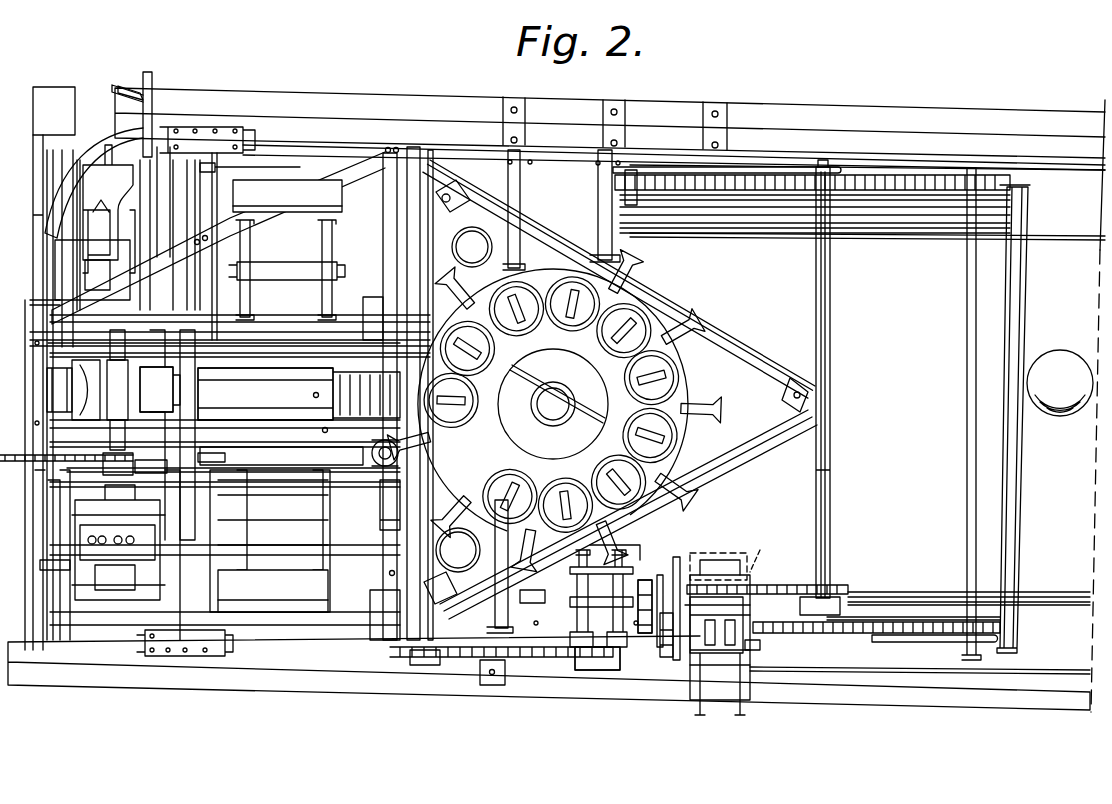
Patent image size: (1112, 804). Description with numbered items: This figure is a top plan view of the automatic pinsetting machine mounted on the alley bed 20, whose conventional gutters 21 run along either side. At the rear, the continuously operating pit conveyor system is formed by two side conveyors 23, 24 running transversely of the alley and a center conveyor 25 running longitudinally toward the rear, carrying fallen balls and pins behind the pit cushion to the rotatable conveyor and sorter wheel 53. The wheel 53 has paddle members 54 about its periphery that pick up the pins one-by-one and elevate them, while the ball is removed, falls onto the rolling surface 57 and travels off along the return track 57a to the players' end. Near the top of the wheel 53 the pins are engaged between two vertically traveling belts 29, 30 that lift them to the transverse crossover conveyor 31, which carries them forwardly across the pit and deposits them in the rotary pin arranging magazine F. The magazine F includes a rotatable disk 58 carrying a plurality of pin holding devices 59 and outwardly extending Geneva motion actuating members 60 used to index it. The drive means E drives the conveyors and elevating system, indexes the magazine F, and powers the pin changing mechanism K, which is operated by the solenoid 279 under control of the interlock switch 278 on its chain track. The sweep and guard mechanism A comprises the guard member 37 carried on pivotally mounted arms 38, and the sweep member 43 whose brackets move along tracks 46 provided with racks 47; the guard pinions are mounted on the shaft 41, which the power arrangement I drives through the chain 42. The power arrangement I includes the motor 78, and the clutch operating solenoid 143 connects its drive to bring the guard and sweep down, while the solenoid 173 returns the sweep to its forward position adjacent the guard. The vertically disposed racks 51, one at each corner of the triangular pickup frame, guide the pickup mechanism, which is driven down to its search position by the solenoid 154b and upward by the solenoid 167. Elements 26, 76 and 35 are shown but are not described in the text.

The return track 57a is at (172, 82).
The rolling surface 57 is at (90, 192).
The paddle members 54 is at (103, 205).
The pin changing mechanism K is at (300, 203).
The side conveyor 24 is at (372, 244).
The diagonal brace 26 is at (93, 316).
The wheel 53 is at (48, 337).
The vertically traveling belt 29 is at (52, 383).
The vertically traveling belt 30 is at (167, 389).
The crossover conveyor 31 is at (292, 400).
The interlock switch 278 is at (325, 427).
The solenoid 279 is at (205, 455).
The center conveyor 25 is at (290, 463).
The support bracket 76 is at (80, 550).
The drive means E is at (176, 541).
The side conveyor 23 is at (355, 551).
The rotatable disk 58 is at (506, 445).
The pin holding devices 59 is at (555, 358).
The Geneva motion actuating members 60 is at (548, 258).
The rotary pin arranging magazine F is at (726, 357).
The vertically disposed racks 51 is at (468, 188).
The gutters 21 is at (1075, 210).
The racks 47 is at (892, 196).
The pivotally mounted arms 38 is at (940, 200).
The tracks 46 is at (882, 212).
The sweep member 43 is at (760, 193).
The shaft 41 is at (830, 482).
The guard member 37 is at (1015, 493).
The sweep and guard mechanism A is at (1030, 275).
The alley bed 20 is at (1080, 305).
The roller 35 is at (1056, 352).
The power arrangement I is at (727, 549).
The motor 78 is at (764, 548).
The chain 42 is at (795, 586).
The solenoid 167 is at (625, 640).
The solenoid 154b is at (575, 650).
The clutch operating solenoid 143 is at (695, 640).
The solenoid 173 is at (750, 648).